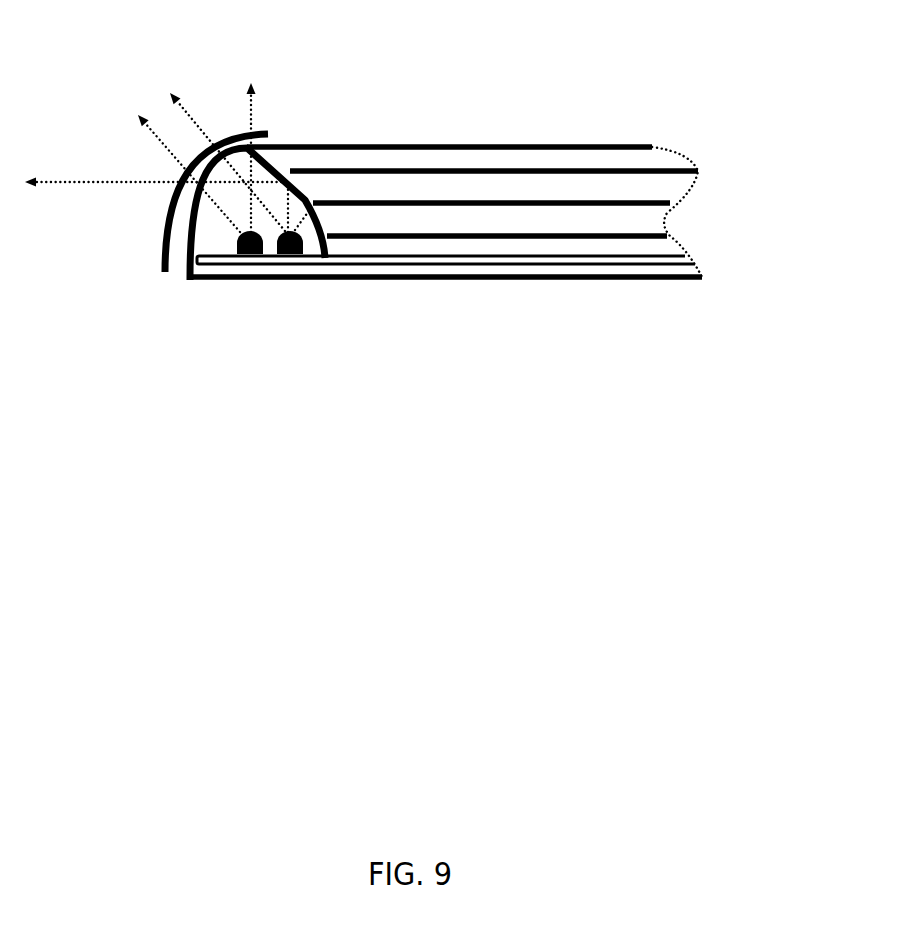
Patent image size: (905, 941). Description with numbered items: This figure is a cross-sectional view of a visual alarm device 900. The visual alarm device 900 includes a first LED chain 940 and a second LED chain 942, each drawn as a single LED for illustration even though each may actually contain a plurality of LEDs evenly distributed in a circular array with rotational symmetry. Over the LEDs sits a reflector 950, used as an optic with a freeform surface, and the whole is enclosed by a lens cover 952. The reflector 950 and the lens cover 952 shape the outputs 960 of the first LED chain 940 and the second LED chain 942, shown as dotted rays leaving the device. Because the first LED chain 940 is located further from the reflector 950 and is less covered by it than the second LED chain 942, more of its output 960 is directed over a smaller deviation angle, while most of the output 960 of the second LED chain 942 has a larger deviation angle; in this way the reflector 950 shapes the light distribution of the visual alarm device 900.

The visual alarm device 900 is at (772, 51).
The first LED chain 940 is at (228, 243).
The second LED chain 942 is at (312, 243).
The reflector 950 is at (303, 191).
The lens cover 952 is at (156, 271).
The outputs 960 is at (241, 105).